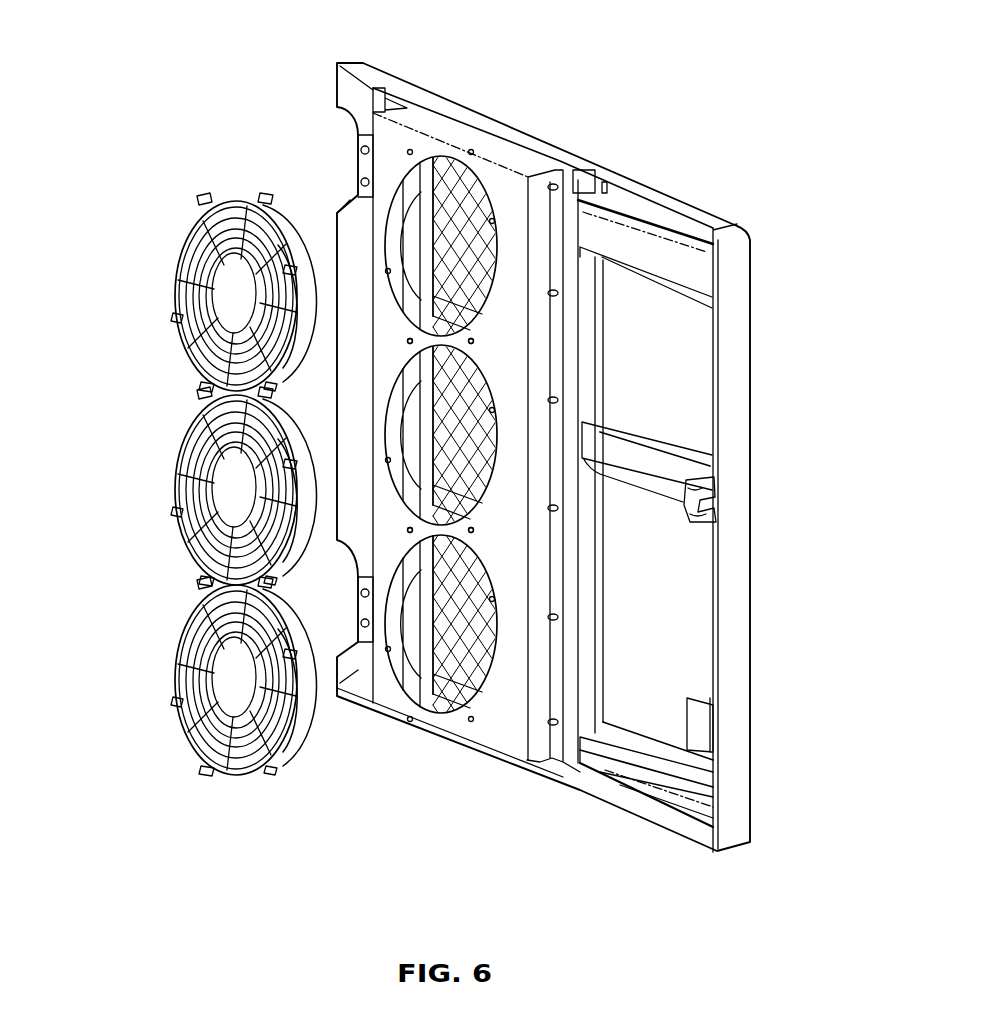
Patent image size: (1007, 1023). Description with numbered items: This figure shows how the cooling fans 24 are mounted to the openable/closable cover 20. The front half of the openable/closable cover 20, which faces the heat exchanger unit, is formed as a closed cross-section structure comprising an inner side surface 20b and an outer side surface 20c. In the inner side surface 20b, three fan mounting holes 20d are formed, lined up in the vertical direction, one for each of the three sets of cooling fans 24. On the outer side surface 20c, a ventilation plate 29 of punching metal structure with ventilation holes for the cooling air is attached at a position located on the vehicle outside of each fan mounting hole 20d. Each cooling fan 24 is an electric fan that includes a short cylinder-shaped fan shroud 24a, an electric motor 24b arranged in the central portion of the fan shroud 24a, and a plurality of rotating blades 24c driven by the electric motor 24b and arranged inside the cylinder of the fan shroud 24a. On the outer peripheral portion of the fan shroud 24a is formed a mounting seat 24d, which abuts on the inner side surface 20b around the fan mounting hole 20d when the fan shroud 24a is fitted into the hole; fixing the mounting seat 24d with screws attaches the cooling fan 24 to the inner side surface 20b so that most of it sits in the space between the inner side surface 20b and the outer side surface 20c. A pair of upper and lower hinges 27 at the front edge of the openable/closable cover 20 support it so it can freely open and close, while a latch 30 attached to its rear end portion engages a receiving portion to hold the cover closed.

The openable/closable cover 20 is at (608, 120).
The inner side surface 20b is at (477, 177).
The outer side surface 20c is at (520, 130).
The fan mounting hole 20d is at (422, 165).
The cooling fan 24 is at (157, 235).
The fan shroud 24a is at (270, 217).
The electric motor 24b is at (225, 293).
The rotating blades 24c is at (200, 335).
The mounting seat 24d is at (195, 207).
The hinge 27 is at (356, 160).
The ventilation plate 29 is at (460, 240).
The latch 30 is at (717, 492).